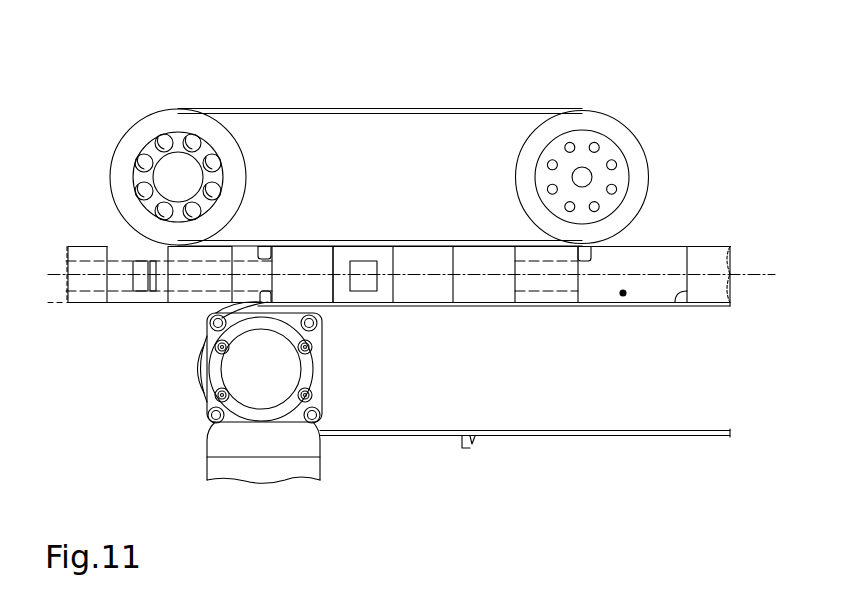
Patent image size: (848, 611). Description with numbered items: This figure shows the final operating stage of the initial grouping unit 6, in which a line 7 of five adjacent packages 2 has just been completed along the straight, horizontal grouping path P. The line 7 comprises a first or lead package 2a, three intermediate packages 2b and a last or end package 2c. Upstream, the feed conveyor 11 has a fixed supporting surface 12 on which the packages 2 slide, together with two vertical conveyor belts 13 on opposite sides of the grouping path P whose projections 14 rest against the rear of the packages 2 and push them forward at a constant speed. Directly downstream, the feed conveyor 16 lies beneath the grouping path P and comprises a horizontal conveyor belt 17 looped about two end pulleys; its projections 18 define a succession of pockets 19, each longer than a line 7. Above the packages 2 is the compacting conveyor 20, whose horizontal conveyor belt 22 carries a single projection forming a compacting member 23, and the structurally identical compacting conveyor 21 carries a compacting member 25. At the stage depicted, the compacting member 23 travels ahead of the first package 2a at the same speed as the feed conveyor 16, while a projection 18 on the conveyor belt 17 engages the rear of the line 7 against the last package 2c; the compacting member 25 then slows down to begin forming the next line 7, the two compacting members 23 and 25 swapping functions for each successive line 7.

The package 2 is at (548, 293).
The first or lead package 2a is at (522, 258).
The intermediate package 2b is at (368, 255).
The last or end package 2c is at (307, 255).
The initial grouping unit 6 is at (740, 96).
The line of packages 7 is at (425, 332).
The feed conveyor 11 is at (77, 214).
The fixed supporting surface 12 is at (110, 303).
The conveyor belt 13 is at (75, 271).
The projection 14 is at (163, 290).
The feed conveyor 16 is at (621, 506).
The conveyor belt 17 is at (680, 437).
The projection 18 is at (265, 297).
The pocket 19 is at (624, 297).
The compacting conveyor 20 is at (373, 60).
The compacting conveyor 21 is at (582, 177).
The conveyor belt 22 is at (477, 108).
The compacting member 23 is at (592, 252).
The compacting member 25 is at (262, 253).
The grouping path P is at (764, 277).